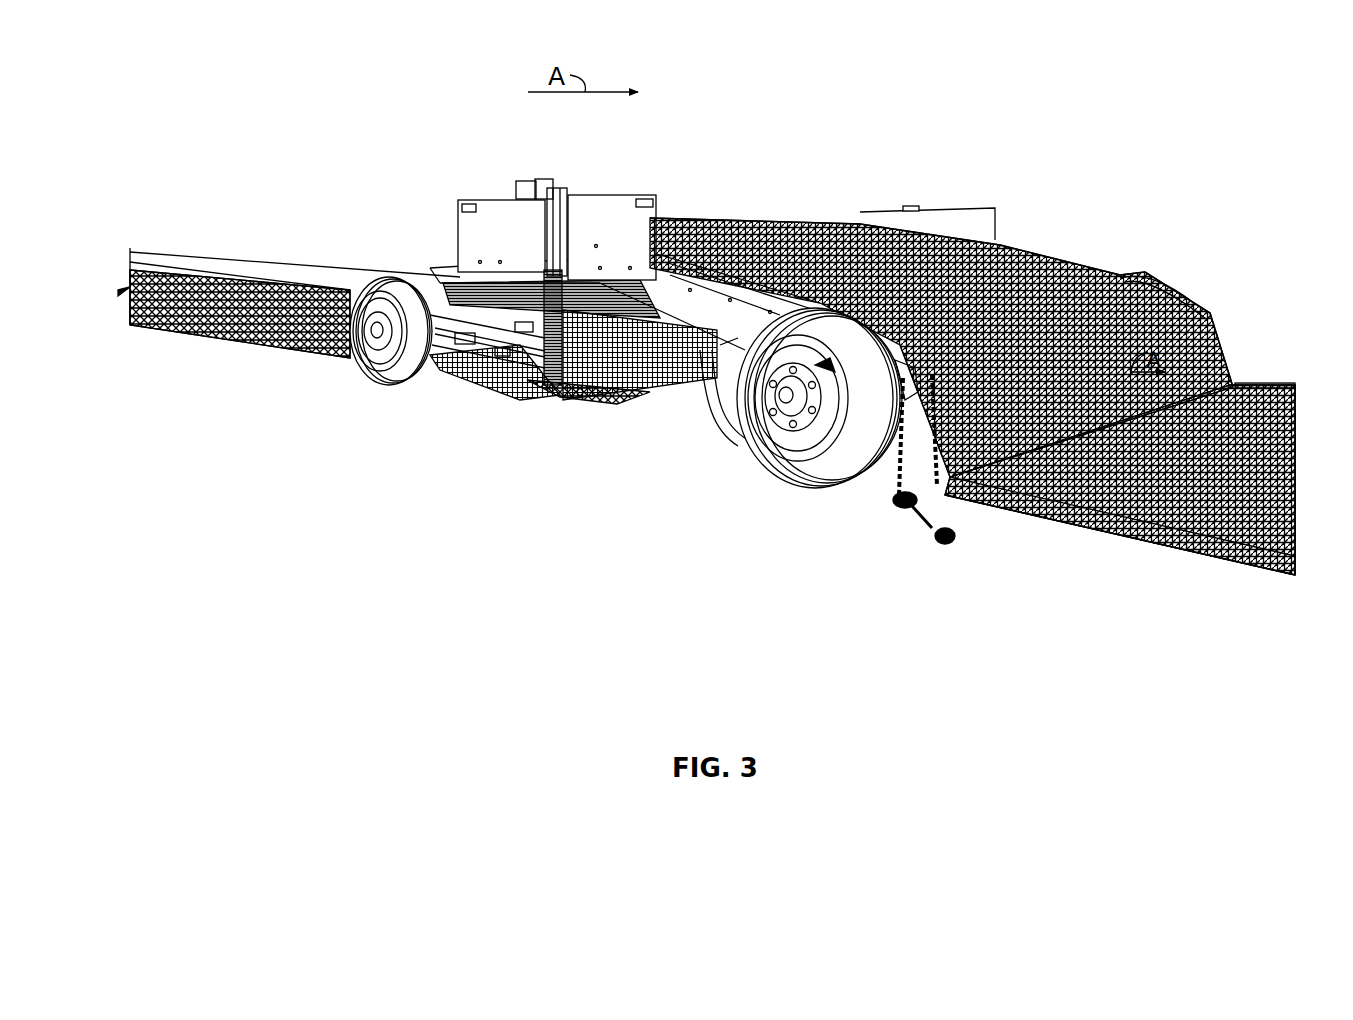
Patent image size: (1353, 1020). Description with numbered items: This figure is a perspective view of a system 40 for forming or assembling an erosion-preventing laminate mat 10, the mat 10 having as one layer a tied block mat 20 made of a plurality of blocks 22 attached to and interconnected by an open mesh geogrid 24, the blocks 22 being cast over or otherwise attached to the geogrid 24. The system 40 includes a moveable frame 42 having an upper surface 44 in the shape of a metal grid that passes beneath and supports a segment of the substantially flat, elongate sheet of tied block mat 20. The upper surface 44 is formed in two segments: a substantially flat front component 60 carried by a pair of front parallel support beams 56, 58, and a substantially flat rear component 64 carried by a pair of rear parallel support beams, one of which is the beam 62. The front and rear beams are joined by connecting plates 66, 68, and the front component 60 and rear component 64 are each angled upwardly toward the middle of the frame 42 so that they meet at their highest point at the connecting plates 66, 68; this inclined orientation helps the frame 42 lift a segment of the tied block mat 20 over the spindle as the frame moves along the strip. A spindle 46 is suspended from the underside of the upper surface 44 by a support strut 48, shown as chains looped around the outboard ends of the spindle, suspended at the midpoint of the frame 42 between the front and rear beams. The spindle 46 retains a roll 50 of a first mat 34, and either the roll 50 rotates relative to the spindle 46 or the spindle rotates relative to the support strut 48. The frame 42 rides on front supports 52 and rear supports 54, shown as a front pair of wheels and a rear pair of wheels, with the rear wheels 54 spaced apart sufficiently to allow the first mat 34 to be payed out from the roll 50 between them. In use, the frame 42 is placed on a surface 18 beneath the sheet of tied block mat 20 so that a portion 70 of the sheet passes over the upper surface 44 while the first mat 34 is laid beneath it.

The mat 10 is at (301, 347).
The surface 18 is at (1192, 580).
The tied block mat 20 is at (262, 290).
The blocks 22 is at (1212, 550).
The geogrid 24 is at (1118, 536).
The first mat 34 is at (482, 386).
The system 40 is at (808, 100).
The moveable frame 42 is at (600, 210).
The upper surface 44 is at (682, 230).
The spindle 46 is at (530, 386).
The support strut 48 is at (498, 323).
The roll 50 is at (560, 396).
The front supports 52 is at (792, 450).
The rear supports 54 is at (372, 369).
The front parallel support beam 56 is at (711, 410).
The front parallel support beam 58 is at (1070, 262).
The front component 60 is at (790, 228).
The rear parallel support beam 62 is at (456, 290).
The rear component 64 is at (457, 376).
The connecting plate 66 is at (502, 226).
The connecting plate 68 is at (972, 228).
The portion 70 is at (880, 228).